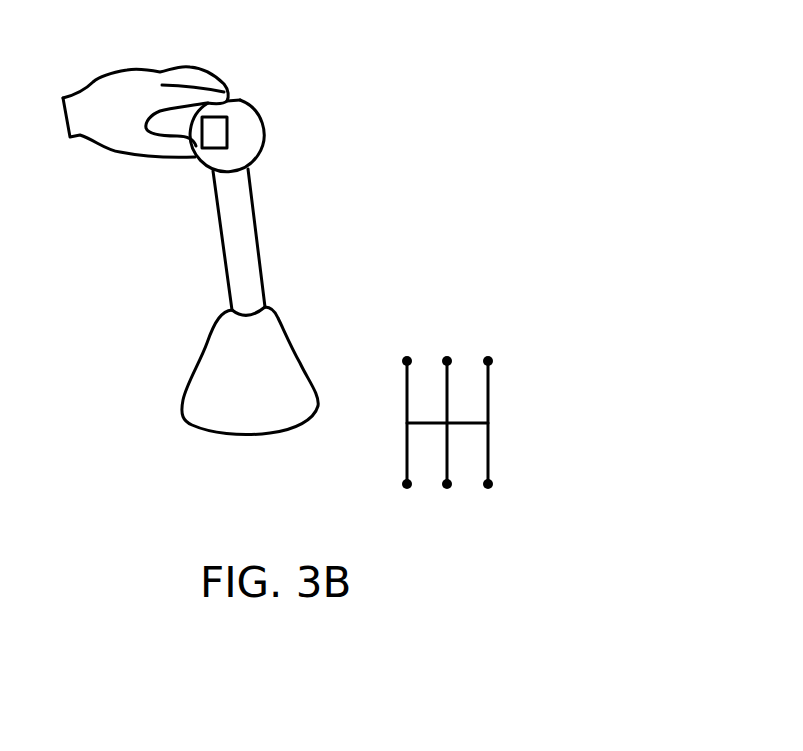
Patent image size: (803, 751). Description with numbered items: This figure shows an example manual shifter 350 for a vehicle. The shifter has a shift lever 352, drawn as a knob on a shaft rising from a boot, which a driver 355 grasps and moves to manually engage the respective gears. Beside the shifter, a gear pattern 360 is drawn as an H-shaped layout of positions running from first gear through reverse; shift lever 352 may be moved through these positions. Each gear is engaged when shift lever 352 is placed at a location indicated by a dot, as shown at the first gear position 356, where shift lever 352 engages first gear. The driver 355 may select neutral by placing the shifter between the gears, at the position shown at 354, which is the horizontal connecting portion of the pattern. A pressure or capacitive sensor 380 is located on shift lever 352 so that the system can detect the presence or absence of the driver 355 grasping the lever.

The manual shifter 350 is at (552, 90).
The shift lever 352 is at (246, 101).
The neutral position 354 is at (453, 423).
The driver 355 is at (82, 92).
The first gear position 356 is at (404, 364).
The gear pattern 360 is at (487, 315).
The pressure or capacitive sensor 380 is at (213, 135).